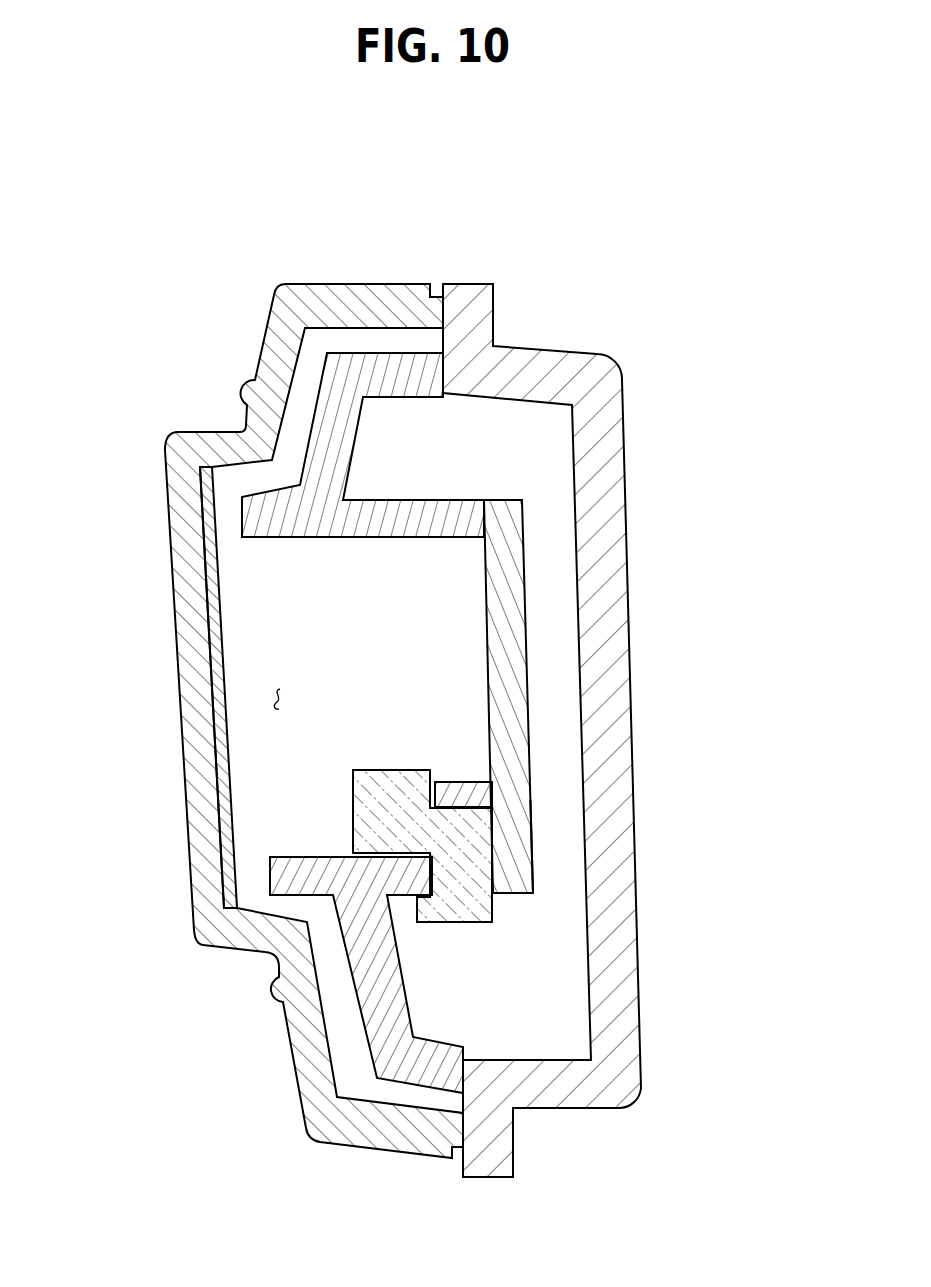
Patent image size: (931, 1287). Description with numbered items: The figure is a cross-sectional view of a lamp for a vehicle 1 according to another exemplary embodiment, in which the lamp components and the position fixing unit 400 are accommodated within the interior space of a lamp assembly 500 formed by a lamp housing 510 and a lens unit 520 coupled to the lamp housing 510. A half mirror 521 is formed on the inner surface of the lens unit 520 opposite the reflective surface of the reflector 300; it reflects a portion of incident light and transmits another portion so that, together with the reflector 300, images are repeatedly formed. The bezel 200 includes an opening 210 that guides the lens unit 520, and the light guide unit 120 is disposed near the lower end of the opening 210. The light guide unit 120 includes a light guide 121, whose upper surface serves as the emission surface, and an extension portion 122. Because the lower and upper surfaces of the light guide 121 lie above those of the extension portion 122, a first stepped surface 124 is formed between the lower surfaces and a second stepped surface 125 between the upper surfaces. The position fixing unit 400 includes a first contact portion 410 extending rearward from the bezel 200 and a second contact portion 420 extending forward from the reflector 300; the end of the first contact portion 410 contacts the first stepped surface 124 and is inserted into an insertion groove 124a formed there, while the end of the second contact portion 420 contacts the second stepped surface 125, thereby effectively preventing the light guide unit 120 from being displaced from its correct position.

The lamp for a vehicle 1 is at (597, 151).
The light guide unit 120 is at (112, 818).
The light guide 121 is at (373, 798).
The extension portion 122 is at (467, 829).
The first stepped surface 124 is at (415, 915).
The insertion groove 124a is at (417, 902).
The second stepped surface 125 is at (456, 795).
The bezel 200 is at (337, 380).
The opening 210 is at (276, 696).
The reflector 300 is at (512, 550).
The position fixing unit 400 is at (762, 800).
The first contact portion 410 is at (530, 888).
The second contact portion 420 is at (532, 890).
The lamp assembly 500 is at (548, 233).
The lamp housing 510 is at (517, 365).
The lens unit 520 is at (348, 290).
The half mirror 521 is at (218, 632).